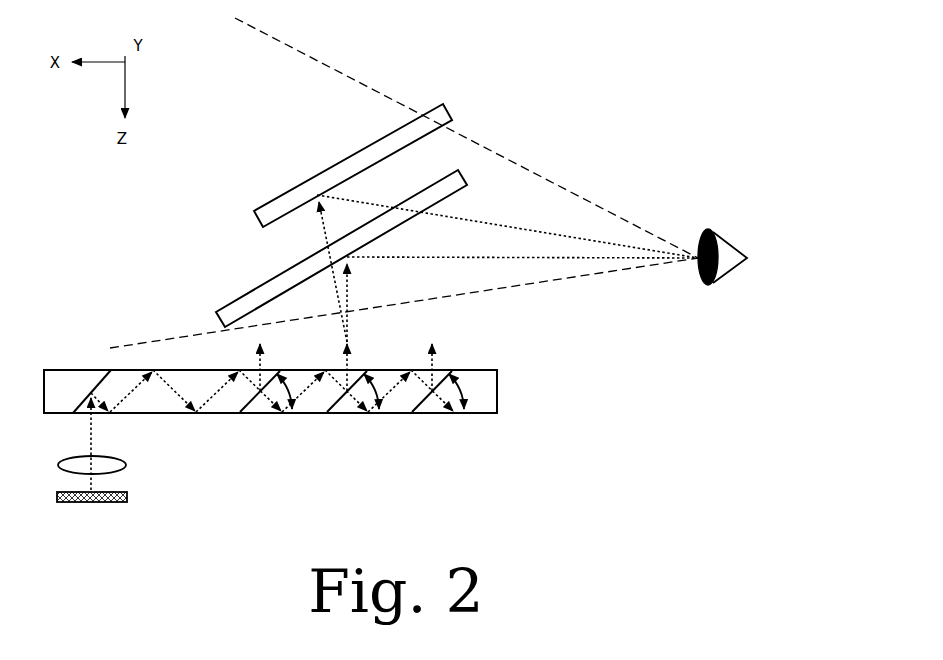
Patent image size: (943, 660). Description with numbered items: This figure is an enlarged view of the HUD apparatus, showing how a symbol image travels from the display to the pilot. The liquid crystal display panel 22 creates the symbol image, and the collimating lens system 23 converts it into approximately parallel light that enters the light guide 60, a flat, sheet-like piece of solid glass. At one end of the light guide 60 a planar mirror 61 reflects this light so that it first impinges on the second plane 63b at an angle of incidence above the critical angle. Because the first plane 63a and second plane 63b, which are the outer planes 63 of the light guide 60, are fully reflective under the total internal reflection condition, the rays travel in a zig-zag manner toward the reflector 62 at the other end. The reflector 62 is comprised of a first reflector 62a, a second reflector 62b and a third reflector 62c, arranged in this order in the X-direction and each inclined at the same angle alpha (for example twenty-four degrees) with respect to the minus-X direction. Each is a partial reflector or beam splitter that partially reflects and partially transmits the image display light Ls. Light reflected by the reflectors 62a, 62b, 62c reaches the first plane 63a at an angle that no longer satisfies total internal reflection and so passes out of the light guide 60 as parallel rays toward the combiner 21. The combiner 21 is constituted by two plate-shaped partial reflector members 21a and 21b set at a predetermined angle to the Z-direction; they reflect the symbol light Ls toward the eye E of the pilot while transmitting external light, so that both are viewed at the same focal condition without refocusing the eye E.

The combiner 21 is at (536, 58).
The plate-shaped member 21a is at (466, 178).
The plate-shaped member 21b is at (453, 111).
The liquid crystal display panel 22 is at (128, 497).
The collimating lens system 23 is at (128, 462).
The light guide 60 is at (102, 362).
The planar mirror 61 is at (81, 400).
The reflector 62 is at (443, 480).
The first reflector 62a is at (255, 413).
The second reflector 62b is at (343, 413).
The third reflector 62c is at (430, 413).
The planes 63 is at (556, 325).
The first plane 63a is at (482, 368).
The second plane 63b is at (483, 416).
The eye E is at (707, 287).
The image display light Ls is at (507, 268).